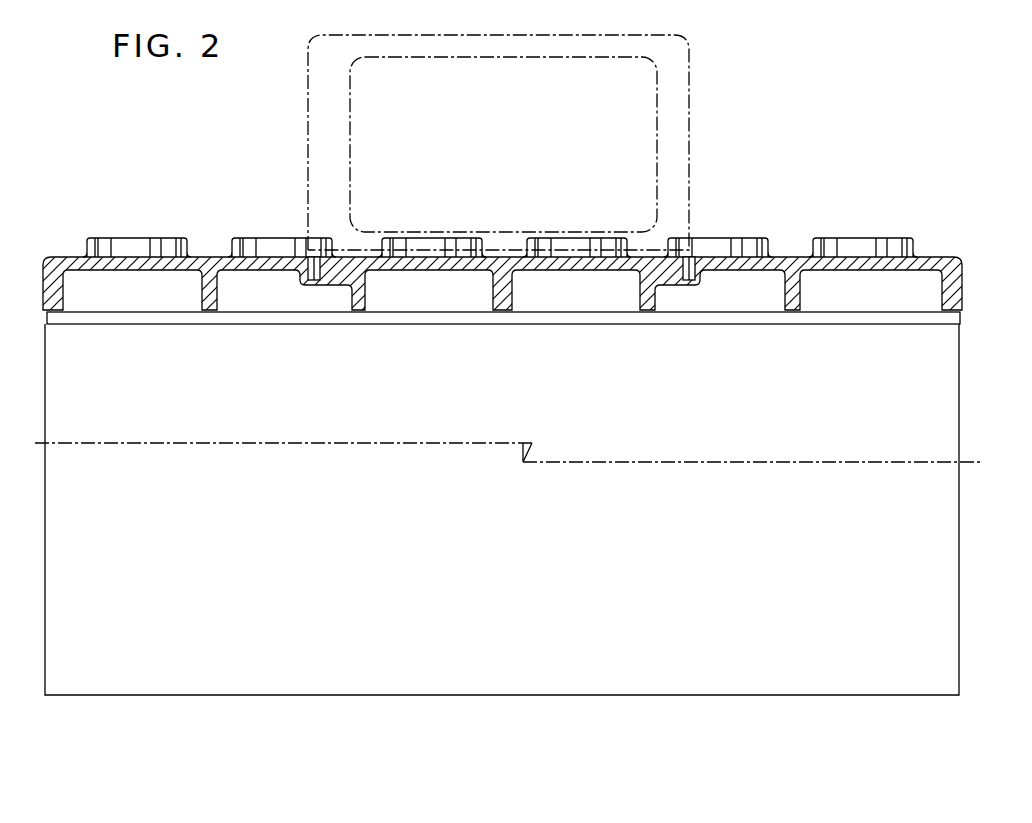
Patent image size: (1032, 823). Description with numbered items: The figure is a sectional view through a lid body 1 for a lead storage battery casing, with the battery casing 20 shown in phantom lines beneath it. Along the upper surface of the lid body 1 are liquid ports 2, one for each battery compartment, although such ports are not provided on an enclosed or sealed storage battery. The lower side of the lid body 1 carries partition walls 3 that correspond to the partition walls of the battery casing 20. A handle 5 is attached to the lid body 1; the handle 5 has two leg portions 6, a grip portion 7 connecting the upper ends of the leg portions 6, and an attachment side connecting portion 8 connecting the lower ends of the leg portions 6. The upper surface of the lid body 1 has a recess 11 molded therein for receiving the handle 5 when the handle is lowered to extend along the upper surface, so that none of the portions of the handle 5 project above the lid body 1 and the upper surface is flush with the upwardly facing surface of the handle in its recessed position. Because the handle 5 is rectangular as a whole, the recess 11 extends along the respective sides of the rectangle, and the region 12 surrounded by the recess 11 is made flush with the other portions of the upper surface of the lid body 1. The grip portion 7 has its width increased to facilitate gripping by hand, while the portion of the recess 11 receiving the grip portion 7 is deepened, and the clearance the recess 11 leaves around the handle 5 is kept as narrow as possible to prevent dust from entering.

The lid body 1 is at (930, 207).
The liquid port 2 is at (105, 238).
The partition wall 3 is at (202, 298).
The handle 5 is at (686, 240).
The leg portion 6 is at (308, 127).
The grip portion 7 is at (487, 58).
The attachment side connecting portion 8 is at (503, 232).
The recess 11 is at (320, 237).
The region surrounded by the recess 12 is at (573, 250).
The battery casing 20 is at (962, 562).